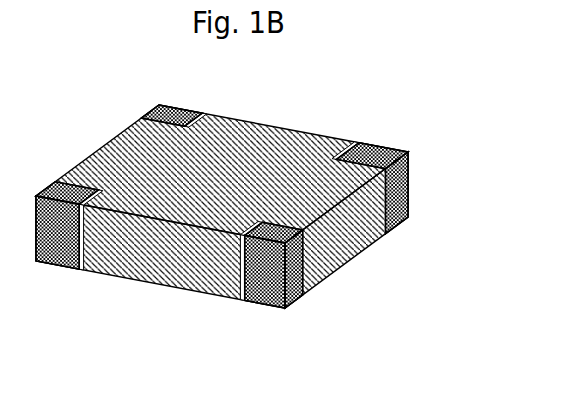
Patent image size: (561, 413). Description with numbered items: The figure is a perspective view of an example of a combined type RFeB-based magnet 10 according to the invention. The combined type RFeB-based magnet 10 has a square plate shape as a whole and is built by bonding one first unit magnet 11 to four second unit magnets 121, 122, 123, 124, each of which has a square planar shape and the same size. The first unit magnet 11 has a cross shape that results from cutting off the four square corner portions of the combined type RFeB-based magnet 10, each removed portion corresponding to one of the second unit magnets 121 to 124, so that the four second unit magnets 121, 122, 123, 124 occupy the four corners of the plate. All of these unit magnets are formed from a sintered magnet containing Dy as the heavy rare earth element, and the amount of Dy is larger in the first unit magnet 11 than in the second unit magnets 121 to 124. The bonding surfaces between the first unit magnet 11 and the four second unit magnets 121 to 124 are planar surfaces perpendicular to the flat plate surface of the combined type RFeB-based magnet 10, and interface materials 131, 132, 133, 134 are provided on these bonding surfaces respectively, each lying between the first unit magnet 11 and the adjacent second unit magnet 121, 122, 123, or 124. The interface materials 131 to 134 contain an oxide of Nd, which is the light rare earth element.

The combined type RFeB-based magnet 10 is at (233, 213).
The first unit magnet 11 is at (249, 121).
The second unit magnet 121 is at (158, 105).
The second unit magnet 122 is at (398, 147).
The second unit magnet 123 is at (263, 288).
The second unit magnet 124 is at (63, 253).
The interface material 131 is at (203, 111).
The interface material 132 is at (354, 141).
The interface material 133 is at (238, 295).
The interface material 134 is at (83, 268).